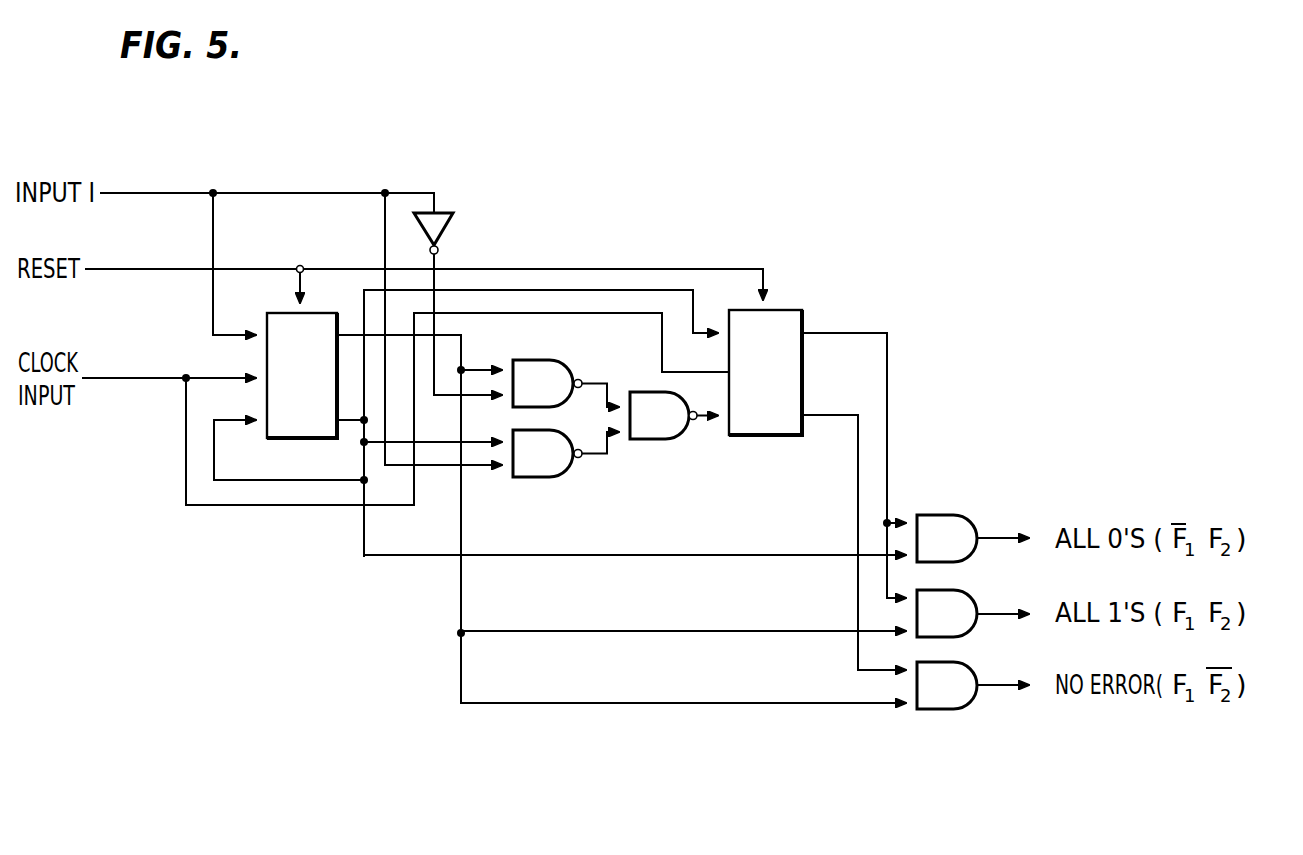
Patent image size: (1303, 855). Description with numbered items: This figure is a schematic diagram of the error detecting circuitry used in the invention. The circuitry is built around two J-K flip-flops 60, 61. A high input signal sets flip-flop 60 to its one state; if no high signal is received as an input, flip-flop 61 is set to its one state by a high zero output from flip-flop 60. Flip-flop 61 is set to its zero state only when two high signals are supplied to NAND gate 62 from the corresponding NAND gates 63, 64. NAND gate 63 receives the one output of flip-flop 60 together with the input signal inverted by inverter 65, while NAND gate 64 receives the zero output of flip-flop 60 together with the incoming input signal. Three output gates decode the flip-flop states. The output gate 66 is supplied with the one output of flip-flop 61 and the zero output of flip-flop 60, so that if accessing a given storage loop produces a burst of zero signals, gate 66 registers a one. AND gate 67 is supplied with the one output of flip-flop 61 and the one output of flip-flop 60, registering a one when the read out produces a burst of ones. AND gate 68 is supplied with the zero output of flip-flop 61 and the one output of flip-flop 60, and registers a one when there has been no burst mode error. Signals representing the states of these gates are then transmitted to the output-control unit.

The J-K flip-flop 60 is at (289, 440).
The J-K flip-flop 61 is at (762, 437).
The NAND gate 62 is at (674, 415).
The NAND gate 63 is at (566, 383).
The NAND gate 64 is at (566, 453).
The inverter 65 is at (446, 234).
The output gate 66 is at (973, 538).
The AND gate 67 is at (973, 613).
The AND gate 68 is at (973, 685).